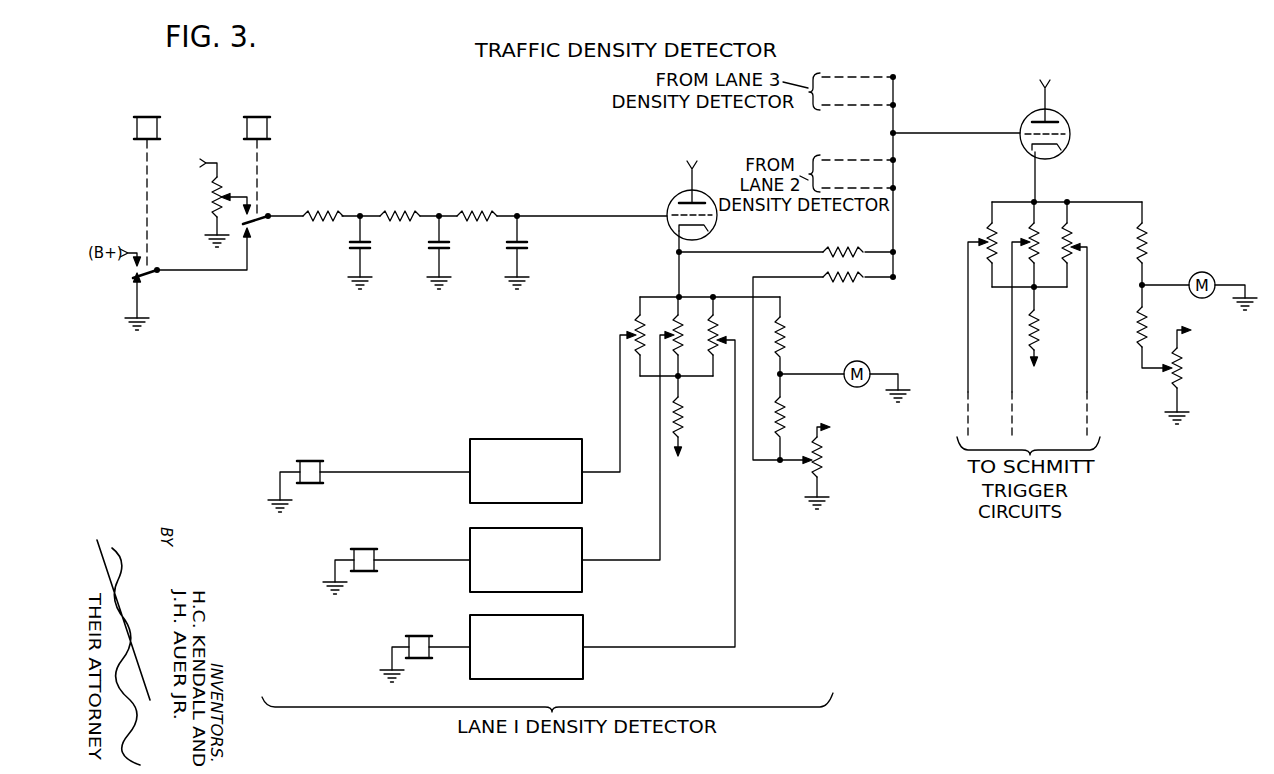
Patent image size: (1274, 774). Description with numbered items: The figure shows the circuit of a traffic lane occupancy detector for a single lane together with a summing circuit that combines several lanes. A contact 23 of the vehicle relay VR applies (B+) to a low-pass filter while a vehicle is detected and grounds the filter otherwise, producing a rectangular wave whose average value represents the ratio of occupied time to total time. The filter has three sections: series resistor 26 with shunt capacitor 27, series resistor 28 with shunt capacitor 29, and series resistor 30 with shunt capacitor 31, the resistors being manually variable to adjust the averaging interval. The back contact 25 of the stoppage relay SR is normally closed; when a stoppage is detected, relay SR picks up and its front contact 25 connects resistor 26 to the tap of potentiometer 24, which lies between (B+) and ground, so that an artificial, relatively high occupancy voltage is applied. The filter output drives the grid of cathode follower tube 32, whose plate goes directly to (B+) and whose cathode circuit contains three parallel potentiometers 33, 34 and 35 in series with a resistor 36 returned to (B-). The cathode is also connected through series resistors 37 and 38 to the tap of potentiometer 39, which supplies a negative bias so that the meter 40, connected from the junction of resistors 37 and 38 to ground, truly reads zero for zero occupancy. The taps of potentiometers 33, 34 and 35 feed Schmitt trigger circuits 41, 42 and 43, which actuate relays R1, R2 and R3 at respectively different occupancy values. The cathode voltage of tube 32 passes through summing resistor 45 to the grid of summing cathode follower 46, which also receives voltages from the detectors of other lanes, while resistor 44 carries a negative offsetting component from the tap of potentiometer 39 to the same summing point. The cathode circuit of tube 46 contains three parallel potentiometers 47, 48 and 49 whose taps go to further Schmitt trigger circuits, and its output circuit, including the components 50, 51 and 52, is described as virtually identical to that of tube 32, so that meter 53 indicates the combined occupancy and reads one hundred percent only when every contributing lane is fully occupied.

The vehicle relay VR is at (145, 116).
The stoppage relay SR is at (256, 116).
The contact 23 is at (155, 273).
The potentiometer 24 is at (211, 207).
The contact 25 is at (259, 224).
The resistor 26 is at (321, 213).
The capacitor 27 is at (368, 247).
The resistor 28 is at (399, 213).
The capacitor 29 is at (447, 247).
The resistor 30 is at (466, 213).
The capacitor 31 is at (526, 247).
The cathode follower tube 32 is at (672, 201).
The potentiometer 33 is at (635, 328).
The potentiometer 34 is at (673, 329).
The potentiometer 35 is at (716, 329).
The resistor 36 is at (685, 429).
The resistor 37 is at (788, 338).
The resistor 38 is at (788, 402).
The potentiometer 39 is at (824, 469).
The meter 40 is at (869, 367).
The Schmitt trigger circuit 41 is at (519, 439).
The Schmitt trigger circuit 42 is at (585, 553).
The Schmitt trigger circuit 43 is at (585, 639).
The resistor 44 is at (843, 290).
The summing resistor 45 is at (843, 247).
The cathode follower 46 is at (1073, 129).
The potentiometer 47 is at (986, 239).
The potentiometer 48 is at (1029, 236).
The potentiometer 49 is at (1074, 240).
The resistor 50 is at (1151, 246).
The resistor 51 is at (1139, 331).
The potentiometer 52 is at (1190, 372).
The meter 53 is at (1209, 274).
The relay R1 is at (306, 460).
The relay R2 is at (366, 548).
The relay R3 is at (420, 636).